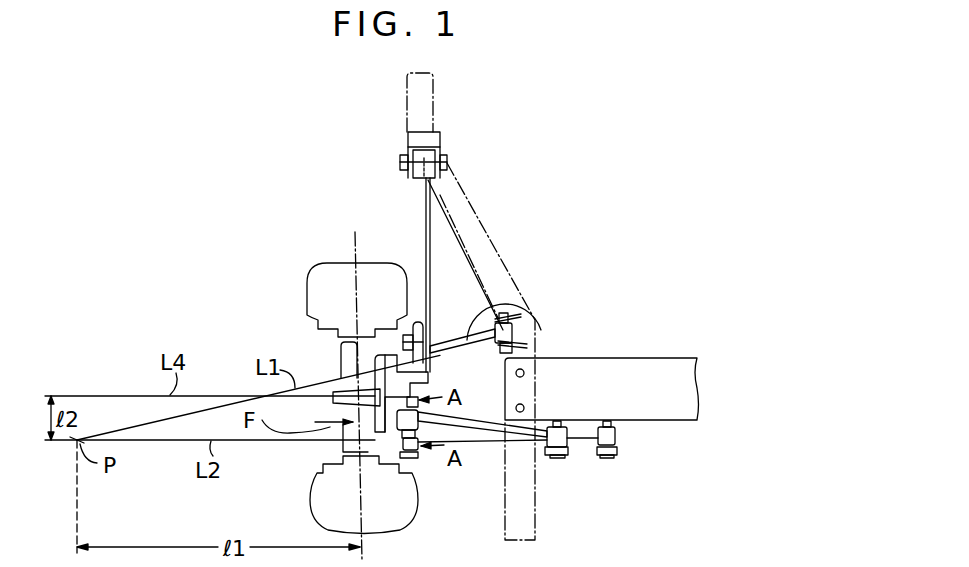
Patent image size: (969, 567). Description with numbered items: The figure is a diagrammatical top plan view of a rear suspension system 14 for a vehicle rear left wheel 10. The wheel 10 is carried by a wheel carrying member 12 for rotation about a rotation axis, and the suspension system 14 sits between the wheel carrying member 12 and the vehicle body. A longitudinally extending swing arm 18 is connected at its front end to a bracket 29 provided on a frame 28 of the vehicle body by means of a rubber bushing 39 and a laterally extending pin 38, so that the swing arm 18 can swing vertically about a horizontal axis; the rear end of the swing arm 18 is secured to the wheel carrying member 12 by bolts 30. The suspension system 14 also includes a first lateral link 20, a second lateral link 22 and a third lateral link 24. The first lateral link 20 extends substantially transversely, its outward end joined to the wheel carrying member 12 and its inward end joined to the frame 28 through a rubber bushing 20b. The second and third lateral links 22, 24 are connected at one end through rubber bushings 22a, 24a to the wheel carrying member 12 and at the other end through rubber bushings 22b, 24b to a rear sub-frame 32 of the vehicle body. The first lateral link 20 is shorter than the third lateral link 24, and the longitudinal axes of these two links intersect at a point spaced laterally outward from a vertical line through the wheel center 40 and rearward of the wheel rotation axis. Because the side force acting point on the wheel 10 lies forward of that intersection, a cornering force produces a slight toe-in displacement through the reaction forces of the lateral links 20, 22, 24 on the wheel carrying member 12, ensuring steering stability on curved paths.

The vehicle rear left wheel 10 is at (307, 290).
The wheel carrying member 12 is at (333, 410).
The rear suspension system 14 is at (449, 259).
The swing arm 18 is at (425, 228).
The first lateral link 20 is at (518, 306).
The rubber bushing 20b is at (518, 335).
The second lateral link 22 is at (473, 408).
The rubber bushing 22a is at (352, 423).
The rubber bushing 22b is at (567, 447).
The third lateral link 24 is at (478, 445).
The rubber bushing 24a is at (392, 445).
The rubber bushing 24b is at (615, 438).
The frame 28 is at (463, 193).
The bracket 29 is at (408, 146).
The bolts 30 is at (437, 330).
The rear sub-frame 32 is at (640, 372).
The laterally extending pin 38 is at (400, 162).
The rubber bushing 39 is at (444, 152).
The wheel center 40 is at (328, 376).